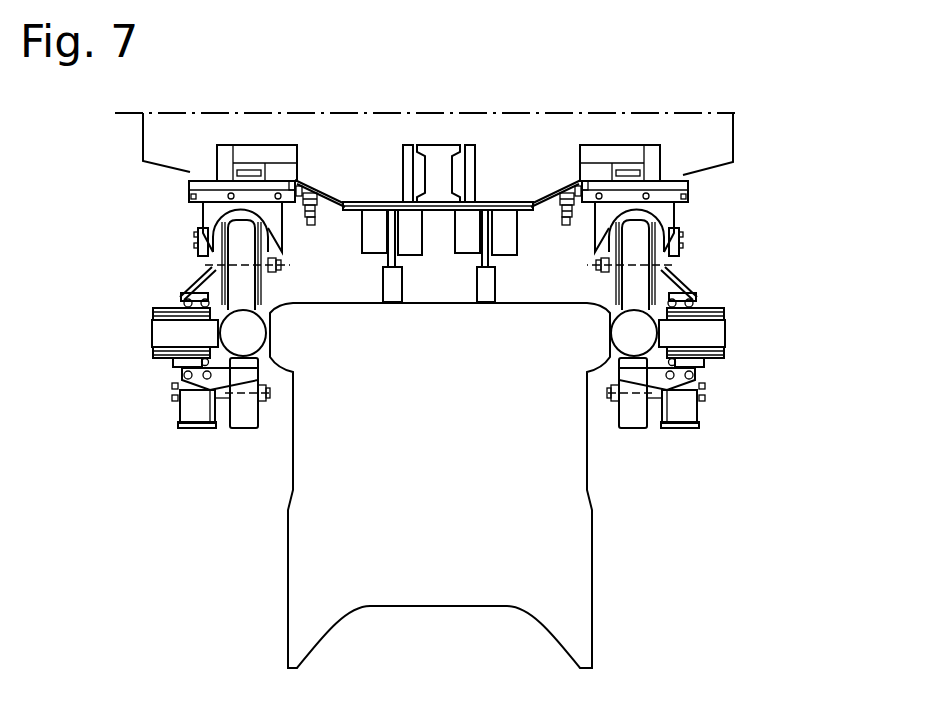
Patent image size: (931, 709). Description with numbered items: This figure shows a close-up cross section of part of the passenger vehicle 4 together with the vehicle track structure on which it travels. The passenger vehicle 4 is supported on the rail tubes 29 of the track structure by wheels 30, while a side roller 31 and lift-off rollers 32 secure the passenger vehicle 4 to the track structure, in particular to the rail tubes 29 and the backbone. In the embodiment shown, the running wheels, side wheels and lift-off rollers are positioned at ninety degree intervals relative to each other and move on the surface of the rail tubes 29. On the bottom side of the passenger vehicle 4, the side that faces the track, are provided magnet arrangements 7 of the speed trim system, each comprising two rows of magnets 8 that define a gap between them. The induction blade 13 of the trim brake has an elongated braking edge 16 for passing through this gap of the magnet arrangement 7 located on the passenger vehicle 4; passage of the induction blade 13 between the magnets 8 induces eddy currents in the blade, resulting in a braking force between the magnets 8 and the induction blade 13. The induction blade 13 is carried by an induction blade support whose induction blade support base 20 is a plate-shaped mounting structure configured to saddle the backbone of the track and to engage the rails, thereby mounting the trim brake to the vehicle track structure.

The passenger vehicle 4 is at (722, 152).
The magnet arrangement 7 is at (390, 188).
The magnets 8 is at (368, 235).
The induction blade 13 is at (371, 261).
The elongated braking edge 16 is at (505, 230).
The induction blade support base 20 is at (542, 545).
The rail tubes 29 is at (632, 328).
The wheels 30 is at (638, 240).
The side roller 31 is at (713, 333).
The lift-off rollers 32 is at (633, 413).